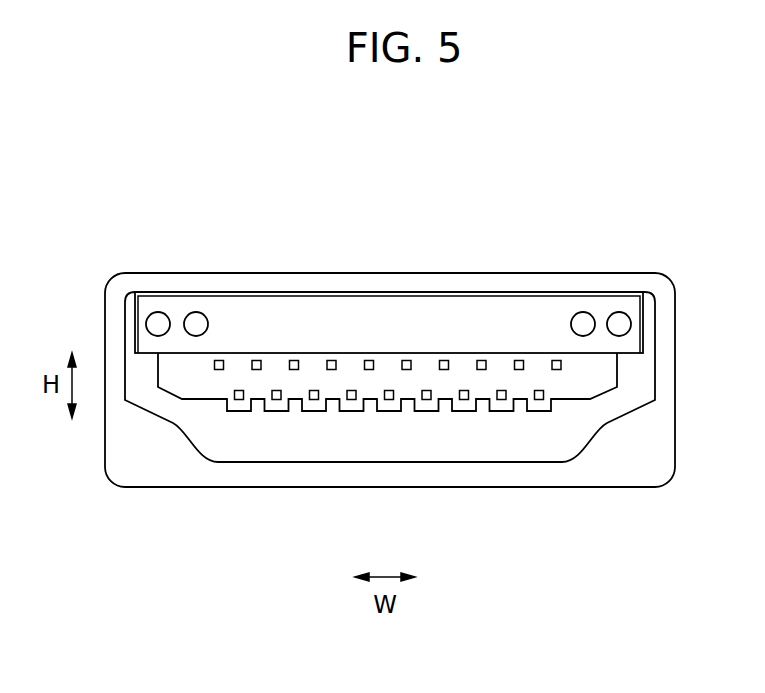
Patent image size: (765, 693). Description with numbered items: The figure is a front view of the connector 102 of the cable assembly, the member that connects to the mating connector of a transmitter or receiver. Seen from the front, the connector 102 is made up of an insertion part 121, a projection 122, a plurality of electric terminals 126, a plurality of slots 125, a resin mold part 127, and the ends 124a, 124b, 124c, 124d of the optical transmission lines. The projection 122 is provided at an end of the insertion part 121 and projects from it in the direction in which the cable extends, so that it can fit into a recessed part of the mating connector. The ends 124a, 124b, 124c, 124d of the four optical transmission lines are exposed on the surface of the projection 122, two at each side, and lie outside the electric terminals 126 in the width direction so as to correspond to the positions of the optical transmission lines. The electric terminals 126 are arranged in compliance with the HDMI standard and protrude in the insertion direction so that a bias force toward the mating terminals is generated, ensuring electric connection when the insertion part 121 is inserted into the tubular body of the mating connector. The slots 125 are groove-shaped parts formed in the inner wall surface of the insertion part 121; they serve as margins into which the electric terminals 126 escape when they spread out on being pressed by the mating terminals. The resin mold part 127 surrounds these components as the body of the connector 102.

The connector 102 is at (390, 272).
The insertion part 121 is at (287, 292).
The projection 122 is at (452, 310).
The end 124a is at (619, 312).
The end 124b is at (583, 312).
The end 124c is at (196, 312).
The end 124d is at (158, 312).
The slot 125 is at (239, 399).
The electric terminal 126 is at (276, 399).
The resin mold part 127 is at (648, 465).